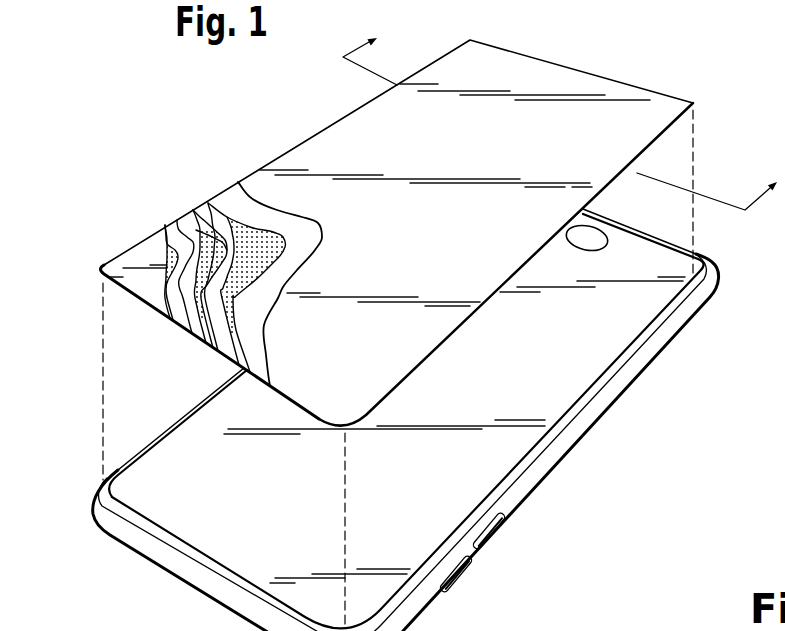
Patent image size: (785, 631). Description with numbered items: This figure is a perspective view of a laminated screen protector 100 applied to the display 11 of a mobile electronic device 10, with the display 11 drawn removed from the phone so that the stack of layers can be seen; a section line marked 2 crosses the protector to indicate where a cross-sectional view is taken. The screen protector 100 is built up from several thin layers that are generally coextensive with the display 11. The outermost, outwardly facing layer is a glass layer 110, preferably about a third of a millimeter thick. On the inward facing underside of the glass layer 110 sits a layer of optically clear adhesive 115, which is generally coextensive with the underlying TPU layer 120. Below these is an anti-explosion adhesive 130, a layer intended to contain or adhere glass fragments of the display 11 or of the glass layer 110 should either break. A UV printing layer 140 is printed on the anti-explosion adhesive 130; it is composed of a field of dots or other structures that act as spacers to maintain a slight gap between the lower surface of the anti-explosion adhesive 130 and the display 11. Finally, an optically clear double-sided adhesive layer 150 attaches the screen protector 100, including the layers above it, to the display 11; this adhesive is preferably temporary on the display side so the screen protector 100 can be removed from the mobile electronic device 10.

The laminated screen protector 100 is at (641, 52).
The mobile electronic device 10 is at (718, 286).
The display 11 is at (532, 368).
The glass layer 110 is at (323, 145).
The optically clear adhesive 115 is at (240, 177).
The TPU layer 120 is at (215, 188).
The anti-explosion adhesive 130 is at (200, 207).
The UV printing layer 140 is at (192, 322).
The double-sided adhesive layer 150 is at (177, 317).
The section line 2- 2 is at (548, 149).